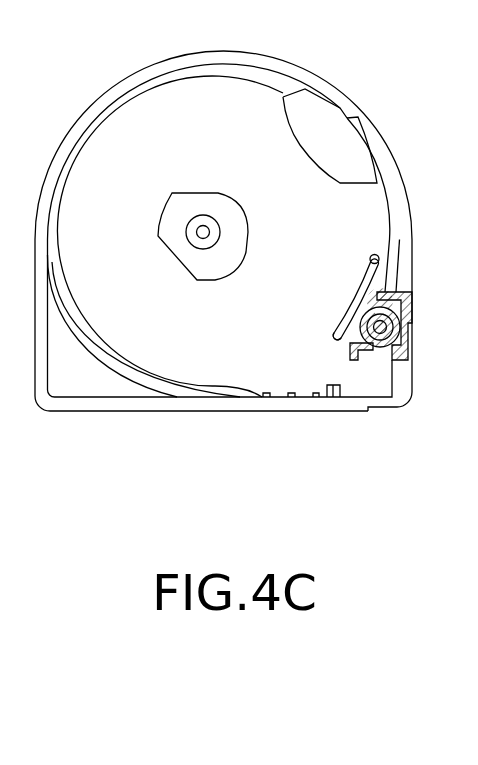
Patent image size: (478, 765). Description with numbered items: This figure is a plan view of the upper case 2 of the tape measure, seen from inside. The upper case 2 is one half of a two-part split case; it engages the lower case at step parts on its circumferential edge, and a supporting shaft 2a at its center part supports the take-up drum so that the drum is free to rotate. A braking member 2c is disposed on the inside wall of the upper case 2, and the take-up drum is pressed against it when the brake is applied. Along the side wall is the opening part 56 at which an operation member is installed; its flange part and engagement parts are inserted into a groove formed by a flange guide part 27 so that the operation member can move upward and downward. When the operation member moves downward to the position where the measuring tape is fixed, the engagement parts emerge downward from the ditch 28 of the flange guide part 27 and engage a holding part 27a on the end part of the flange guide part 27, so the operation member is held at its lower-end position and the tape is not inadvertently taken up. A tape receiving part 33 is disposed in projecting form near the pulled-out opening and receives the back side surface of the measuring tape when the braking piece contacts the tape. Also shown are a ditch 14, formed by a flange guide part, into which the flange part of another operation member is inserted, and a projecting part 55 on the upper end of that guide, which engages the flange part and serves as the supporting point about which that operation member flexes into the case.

The upper case 2 is at (253, 60).
The supporting shaft 2a is at (183, 273).
The braking member 2c is at (118, 376).
The ditch 14 is at (393, 338).
The flange guide part 27 is at (356, 294).
The holding part 27a is at (333, 337).
The ditch 28 is at (380, 290).
The tape receiving part 33 is at (283, 399).
The projecting part 55 is at (373, 254).
The opening part 56 is at (390, 160).